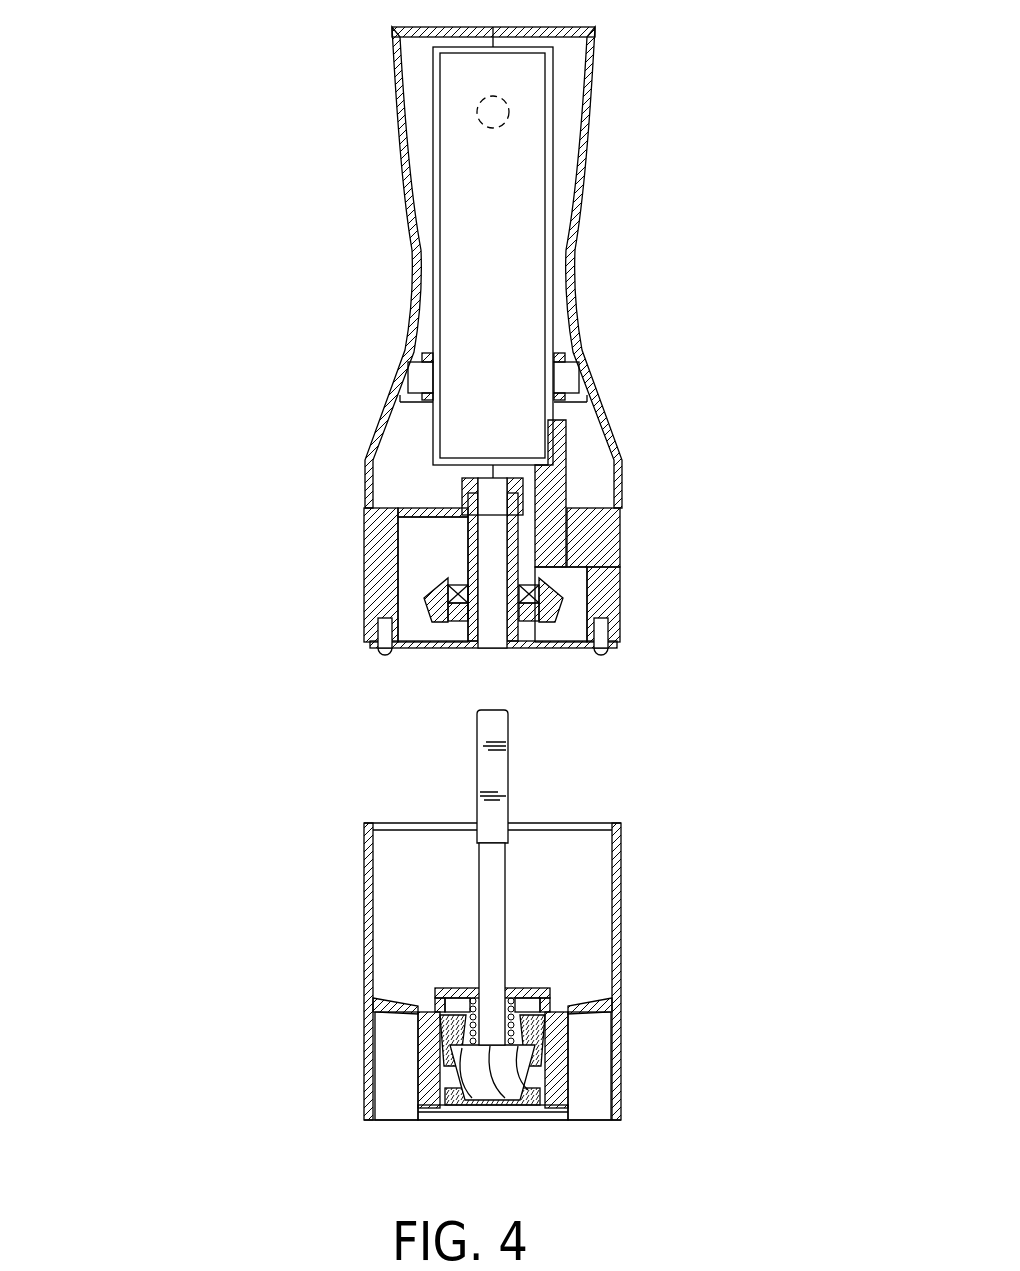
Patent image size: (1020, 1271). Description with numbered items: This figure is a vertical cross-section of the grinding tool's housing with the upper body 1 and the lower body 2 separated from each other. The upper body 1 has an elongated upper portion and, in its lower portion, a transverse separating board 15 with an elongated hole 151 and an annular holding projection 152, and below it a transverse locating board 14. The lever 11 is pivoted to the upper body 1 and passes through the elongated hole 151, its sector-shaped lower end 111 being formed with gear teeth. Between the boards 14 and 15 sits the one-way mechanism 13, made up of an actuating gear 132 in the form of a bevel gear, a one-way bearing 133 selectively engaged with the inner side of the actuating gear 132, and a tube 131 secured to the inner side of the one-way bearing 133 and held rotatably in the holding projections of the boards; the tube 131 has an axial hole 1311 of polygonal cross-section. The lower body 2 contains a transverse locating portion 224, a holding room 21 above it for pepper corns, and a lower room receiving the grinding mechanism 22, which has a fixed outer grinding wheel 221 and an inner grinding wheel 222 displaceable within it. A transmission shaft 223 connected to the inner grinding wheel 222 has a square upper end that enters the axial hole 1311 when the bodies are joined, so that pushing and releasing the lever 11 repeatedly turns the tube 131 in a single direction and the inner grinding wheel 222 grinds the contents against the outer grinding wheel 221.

The upper body 1 is at (590, 272).
The lever 11 is at (497, 170).
The sector-shaped lower end 111 is at (540, 578).
The one-way mechanism 13 is at (489, 625).
The tube 131 is at (507, 605).
The axial hole 1311 is at (490, 633).
The actuating gear 132 is at (442, 593).
The one-way bearing 133 is at (433, 617).
The transverse locating board 14 is at (553, 648).
The transverse separating board 15 is at (450, 508).
The elongated hole 151 is at (535, 490).
The annular holding projection 152 is at (463, 482).
The lower body 2 is at (492, 915).
The holding room 21 is at (398, 930).
The grinding mechanism 22 is at (592, 1060).
The outer grinding wheel 221 is at (480, 1070).
The inner grinding wheel 222 is at (438, 1070).
The transmission shaft 223 is at (503, 775).
The transverse locating portion 224 is at (447, 988).